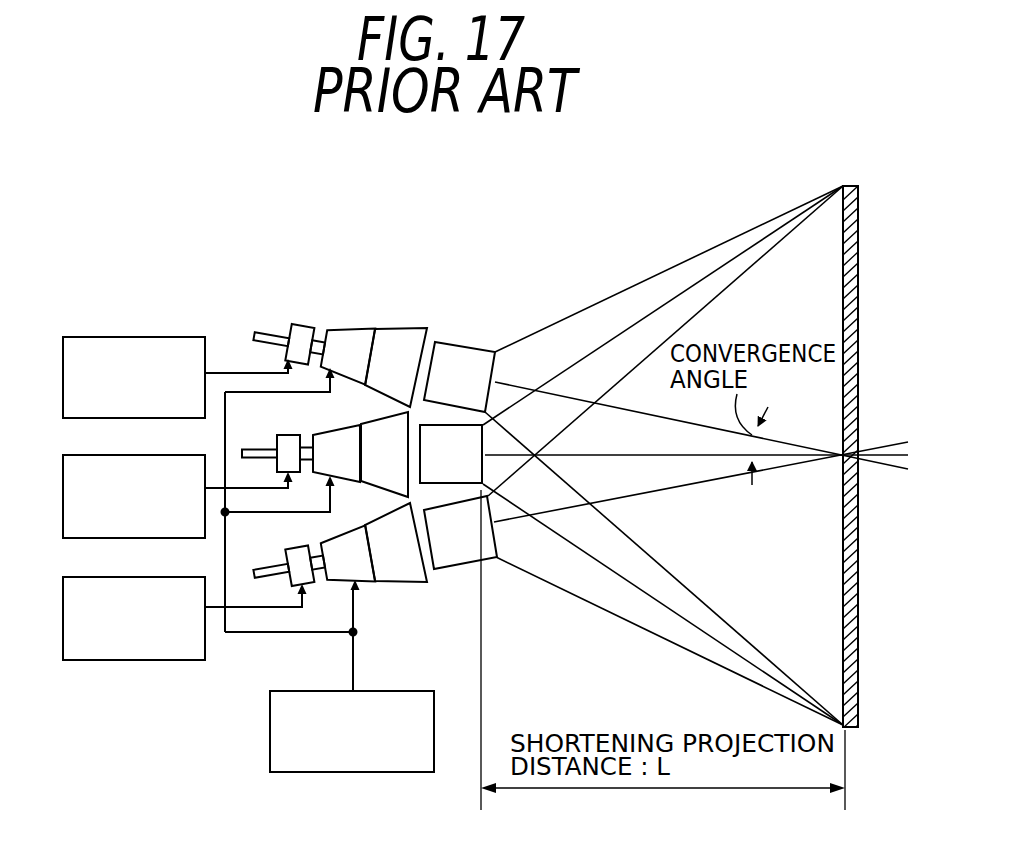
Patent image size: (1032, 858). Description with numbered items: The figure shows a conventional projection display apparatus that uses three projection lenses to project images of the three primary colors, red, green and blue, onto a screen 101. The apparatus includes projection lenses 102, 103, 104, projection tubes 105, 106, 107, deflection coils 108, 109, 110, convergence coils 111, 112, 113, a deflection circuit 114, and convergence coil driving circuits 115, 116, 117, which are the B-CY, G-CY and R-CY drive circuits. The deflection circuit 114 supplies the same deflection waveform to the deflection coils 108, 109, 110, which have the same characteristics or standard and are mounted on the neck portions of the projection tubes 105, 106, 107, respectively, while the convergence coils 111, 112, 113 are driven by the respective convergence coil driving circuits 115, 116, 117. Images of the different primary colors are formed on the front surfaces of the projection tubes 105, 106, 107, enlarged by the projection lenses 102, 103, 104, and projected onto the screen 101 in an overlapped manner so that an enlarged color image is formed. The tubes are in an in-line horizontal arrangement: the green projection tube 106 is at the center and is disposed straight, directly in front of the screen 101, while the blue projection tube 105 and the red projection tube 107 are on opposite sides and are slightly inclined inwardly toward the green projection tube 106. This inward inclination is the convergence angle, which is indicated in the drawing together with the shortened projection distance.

The screen 101 is at (858, 296).
The projection lens 102 is at (466, 343).
The projection lens 103 is at (418, 488).
The projection lens 104 is at (463, 569).
The blue projection tube 105 is at (405, 335).
The green projection tube 106 is at (385, 418).
The red projection tube 107 is at (398, 583).
The deflection coil 108 is at (358, 330).
The deflection coil 109 is at (345, 427).
The deflection coil 110 is at (328, 582).
The convergence coil 111 is at (294, 325).
The convergence coil 112 is at (280, 435).
The convergence coil 113 is at (292, 552).
The deflection circuit 114 is at (382, 691).
The convergence coil driving circuit 115 is at (165, 338).
The convergence coil driving circuit 116 is at (160, 456).
The convergence coil driving circuit 117 is at (160, 578).